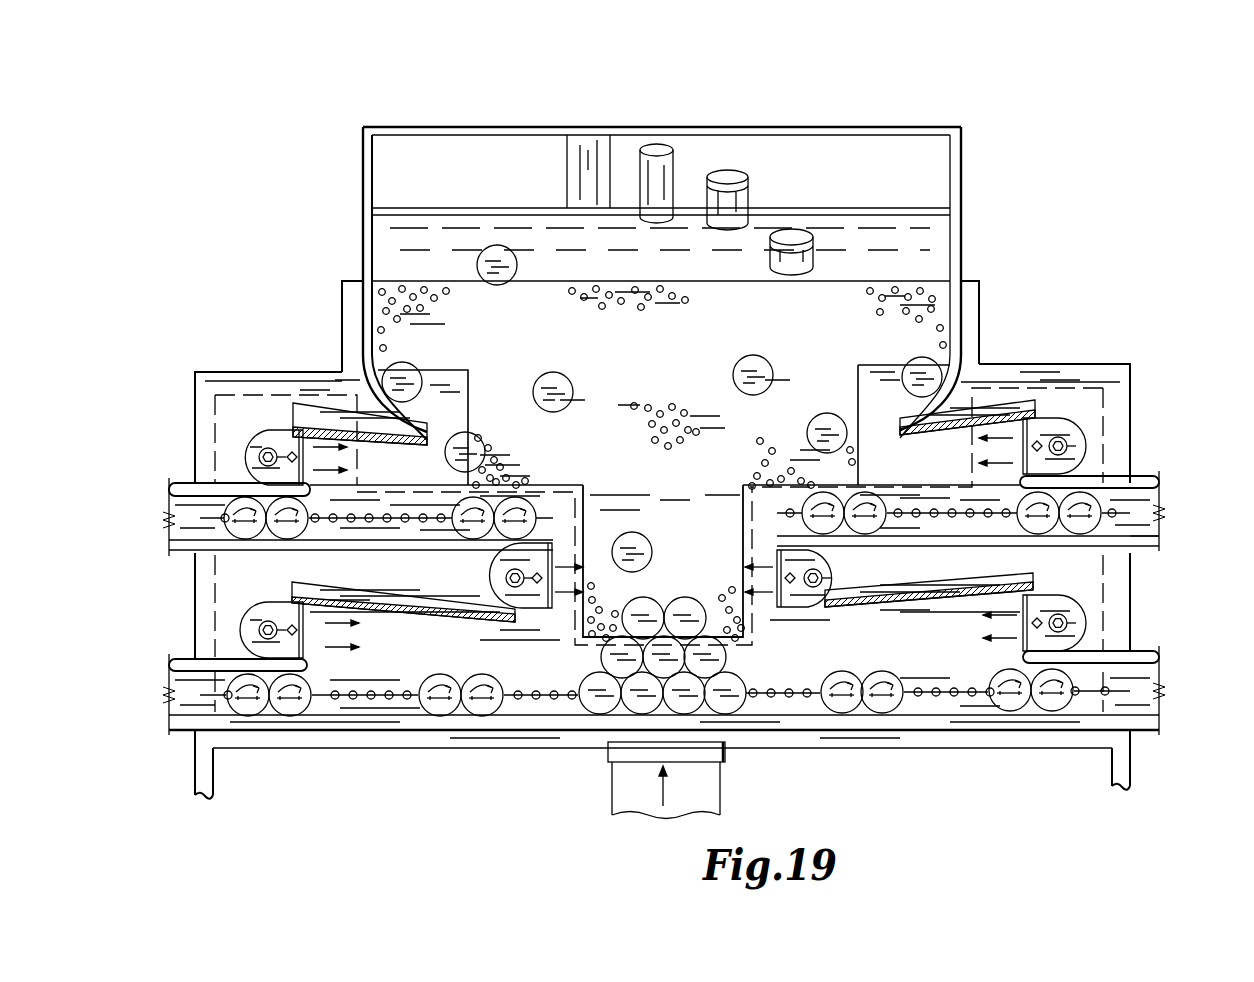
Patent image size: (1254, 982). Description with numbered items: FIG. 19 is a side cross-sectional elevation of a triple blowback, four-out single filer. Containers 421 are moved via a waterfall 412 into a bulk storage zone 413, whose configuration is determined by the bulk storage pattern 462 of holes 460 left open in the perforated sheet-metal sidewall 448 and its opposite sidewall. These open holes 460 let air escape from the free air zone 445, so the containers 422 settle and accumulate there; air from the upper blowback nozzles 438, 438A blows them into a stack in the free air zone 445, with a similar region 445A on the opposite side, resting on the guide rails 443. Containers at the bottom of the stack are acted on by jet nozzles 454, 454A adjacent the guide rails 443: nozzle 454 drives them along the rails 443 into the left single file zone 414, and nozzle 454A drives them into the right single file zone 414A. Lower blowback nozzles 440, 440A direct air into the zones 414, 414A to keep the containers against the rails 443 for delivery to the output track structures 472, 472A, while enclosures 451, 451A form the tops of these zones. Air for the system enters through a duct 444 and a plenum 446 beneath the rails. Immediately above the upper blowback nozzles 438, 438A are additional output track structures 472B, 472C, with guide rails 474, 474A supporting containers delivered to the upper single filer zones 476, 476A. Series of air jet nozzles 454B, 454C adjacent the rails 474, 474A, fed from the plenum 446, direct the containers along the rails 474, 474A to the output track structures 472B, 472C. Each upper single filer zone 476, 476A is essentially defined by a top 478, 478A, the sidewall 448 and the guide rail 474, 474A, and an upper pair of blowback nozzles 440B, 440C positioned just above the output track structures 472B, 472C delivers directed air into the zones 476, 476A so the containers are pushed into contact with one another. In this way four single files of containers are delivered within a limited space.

The waterfall 412 is at (932, 209).
The bulk storage zone 413 is at (682, 475).
The left single file zone 414 is at (423, 665).
The right single file zone 414A is at (922, 657).
The containers 421 is at (657, 152).
The containers 422 is at (510, 260).
The upper blowback nozzle 438 is at (524, 597).
The upper blowback nozzle 438A is at (795, 597).
The lower blowback nozzle 440 is at (275, 612).
The lower blowback nozzle 440A is at (1045, 603).
The upper blowback nozzle 440B is at (270, 444).
The upper blowback nozzle 440C is at (1075, 442).
The guide rails 443 is at (513, 718).
The inlet duct 444 is at (714, 800).
The free air zone 445 is at (552, 470).
The balls 445A is at (805, 463).
The plenum 446 is at (724, 750).
The sidewall 448 is at (363, 310).
The enclosure 451 is at (455, 612).
The enclosure 451A is at (905, 592).
The jet nozzle 454 is at (371, 700).
The jet nozzle 454A is at (958, 698).
The air jet nozzles 454B is at (368, 523).
The air jet nozzles 454C is at (988, 518).
The holes 460 is at (426, 283).
The bulk storage pattern 462 is at (961, 322).
The output track structure 472 is at (190, 685).
The output track structure 472A is at (1145, 688).
The single filer output track structure 472B is at (190, 505).
The single filer output track structure 472C is at (1125, 500).
The guide rail 474 is at (425, 548).
The guide rail 474A is at (1135, 542).
The upper single filer zone 476 is at (420, 480).
The upper single filer zone 476A is at (937, 473).
The top 478 is at (405, 428).
The top 478A is at (1000, 405).